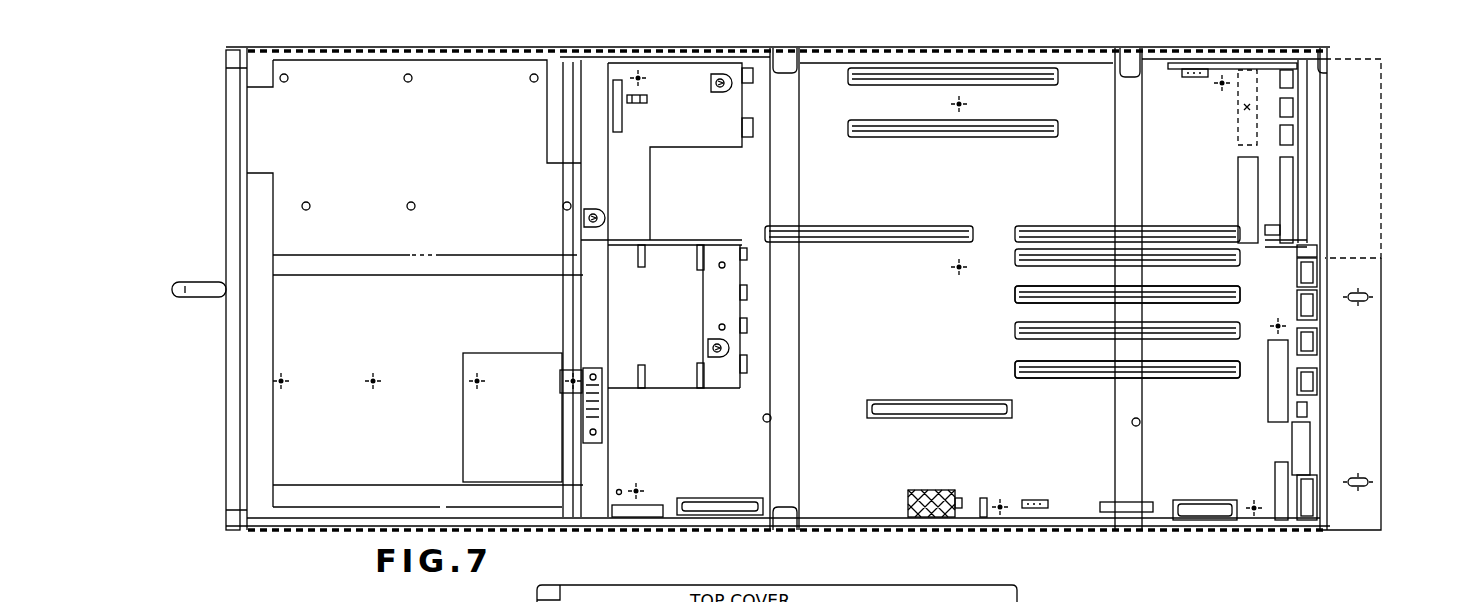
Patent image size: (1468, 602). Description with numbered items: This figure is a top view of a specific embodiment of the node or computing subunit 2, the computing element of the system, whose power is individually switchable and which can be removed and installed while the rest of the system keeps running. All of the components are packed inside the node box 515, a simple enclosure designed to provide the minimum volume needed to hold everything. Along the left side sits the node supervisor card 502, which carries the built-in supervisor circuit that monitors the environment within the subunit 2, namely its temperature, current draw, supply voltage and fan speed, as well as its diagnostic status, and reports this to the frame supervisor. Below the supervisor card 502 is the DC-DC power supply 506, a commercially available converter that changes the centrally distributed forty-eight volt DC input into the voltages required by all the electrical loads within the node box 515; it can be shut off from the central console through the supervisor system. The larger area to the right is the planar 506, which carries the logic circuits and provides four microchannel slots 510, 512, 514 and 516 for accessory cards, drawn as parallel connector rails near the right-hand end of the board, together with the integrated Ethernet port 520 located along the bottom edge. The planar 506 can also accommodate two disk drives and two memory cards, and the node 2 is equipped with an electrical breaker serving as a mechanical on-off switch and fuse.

The computing subunit 2 is at (300, 548).
The node supervisor card 502 is at (282, 130).
The planar 506 is at (302, 442).
The microchannel slot 510 is at (1208, 372).
The microchannel slot 512 is at (1223, 327).
The microchannel slot 514 is at (1238, 297).
The node box 515 is at (226, 210).
The microchannel slot 516 is at (1238, 258).
The integrated Ethernet port 520 is at (1217, 507).